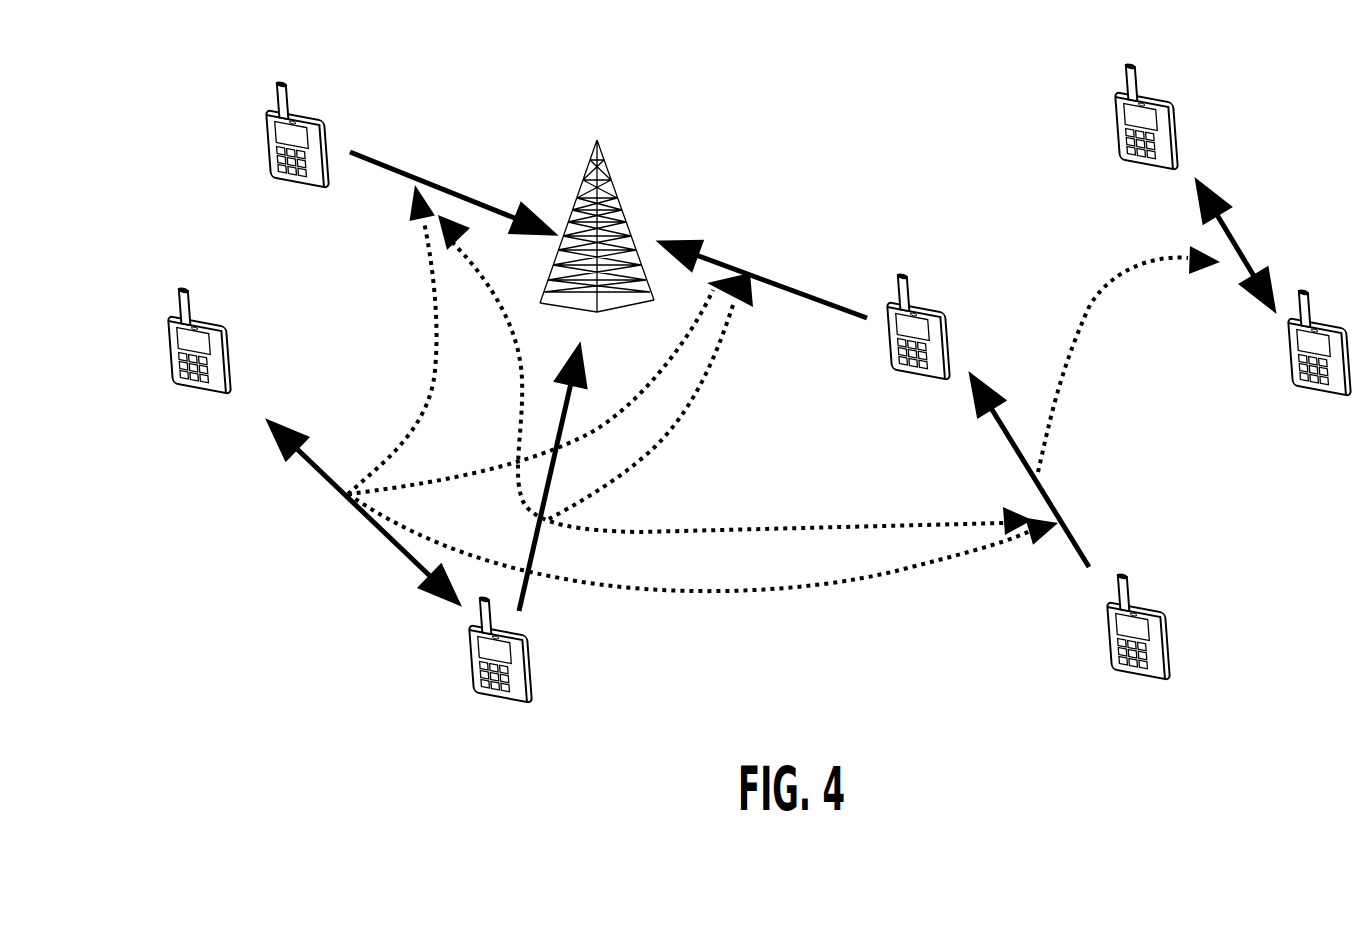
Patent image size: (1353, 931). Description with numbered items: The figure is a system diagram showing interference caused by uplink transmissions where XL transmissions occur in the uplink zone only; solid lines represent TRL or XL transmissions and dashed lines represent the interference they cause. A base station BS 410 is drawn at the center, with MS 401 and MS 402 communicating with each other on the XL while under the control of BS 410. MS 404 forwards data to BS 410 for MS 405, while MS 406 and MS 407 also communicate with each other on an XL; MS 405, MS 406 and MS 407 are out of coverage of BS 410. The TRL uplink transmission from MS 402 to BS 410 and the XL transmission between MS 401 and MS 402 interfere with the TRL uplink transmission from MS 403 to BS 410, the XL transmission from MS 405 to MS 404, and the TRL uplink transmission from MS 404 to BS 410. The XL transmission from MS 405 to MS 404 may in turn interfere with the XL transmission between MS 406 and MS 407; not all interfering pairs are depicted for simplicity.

The MS 401 is at (168, 352).
The MS 402 is at (470, 648).
The MS 403 is at (267, 123).
The MS 404 is at (943, 300).
The MS 405 is at (1108, 640).
The MS 406 is at (1115, 117).
The MS 407 is at (1312, 393).
The BS 410 is at (617, 210).